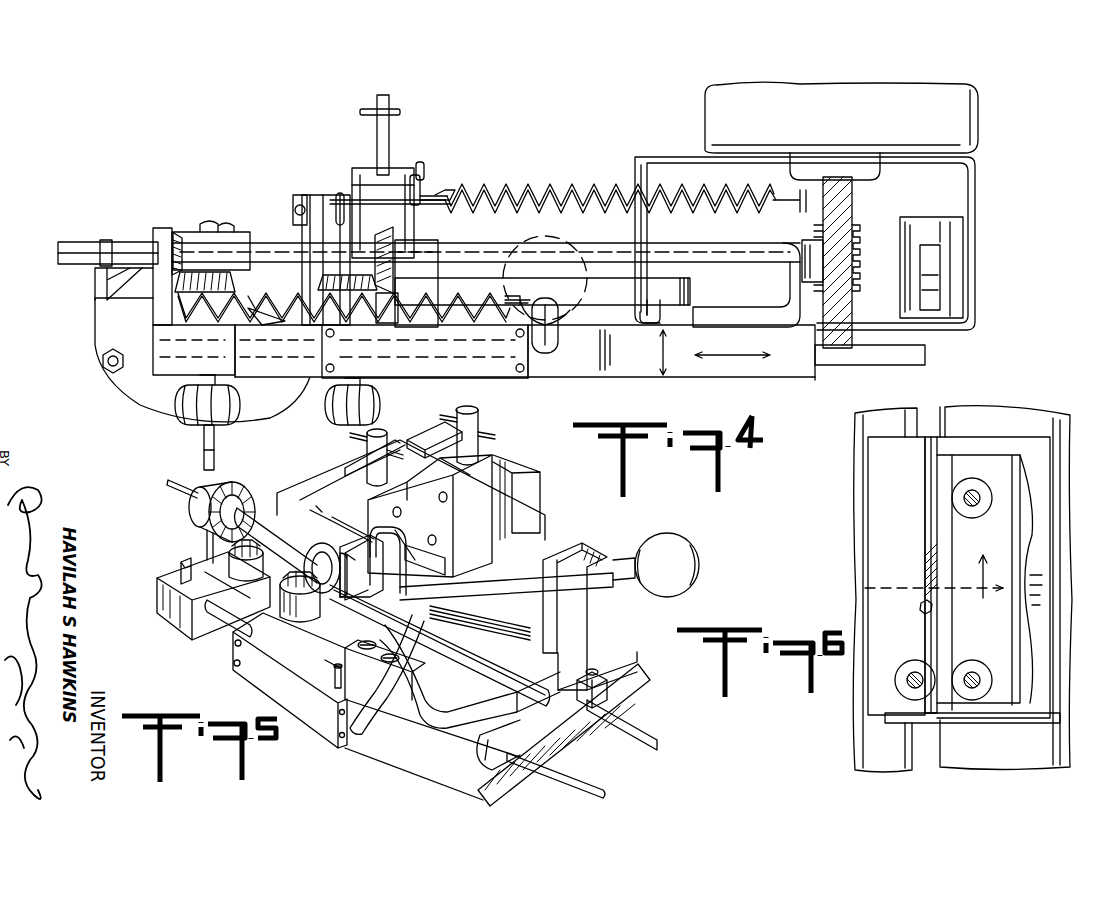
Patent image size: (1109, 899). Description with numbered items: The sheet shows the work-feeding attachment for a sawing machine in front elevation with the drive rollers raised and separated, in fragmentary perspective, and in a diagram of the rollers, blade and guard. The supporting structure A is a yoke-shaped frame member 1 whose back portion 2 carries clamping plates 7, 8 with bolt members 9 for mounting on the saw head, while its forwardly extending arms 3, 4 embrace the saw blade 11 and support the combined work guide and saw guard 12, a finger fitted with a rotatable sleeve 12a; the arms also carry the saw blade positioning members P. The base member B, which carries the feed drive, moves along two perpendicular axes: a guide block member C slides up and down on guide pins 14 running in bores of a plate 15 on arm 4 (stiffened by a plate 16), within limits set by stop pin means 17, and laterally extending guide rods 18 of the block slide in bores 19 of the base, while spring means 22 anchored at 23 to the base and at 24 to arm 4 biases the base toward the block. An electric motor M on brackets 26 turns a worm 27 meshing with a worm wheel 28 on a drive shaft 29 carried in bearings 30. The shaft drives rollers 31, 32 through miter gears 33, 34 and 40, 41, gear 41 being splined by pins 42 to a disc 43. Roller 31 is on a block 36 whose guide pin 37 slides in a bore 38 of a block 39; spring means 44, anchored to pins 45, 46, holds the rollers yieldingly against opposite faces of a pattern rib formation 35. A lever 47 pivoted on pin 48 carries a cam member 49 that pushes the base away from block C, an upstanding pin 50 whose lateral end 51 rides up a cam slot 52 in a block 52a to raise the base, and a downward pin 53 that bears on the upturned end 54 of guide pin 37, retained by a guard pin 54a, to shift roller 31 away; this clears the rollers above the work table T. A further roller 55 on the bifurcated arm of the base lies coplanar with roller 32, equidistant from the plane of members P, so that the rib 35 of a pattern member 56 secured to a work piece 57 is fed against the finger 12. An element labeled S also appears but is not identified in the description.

In FIG. 4, the yoke-shaped frame member 1 is at (90, 314).
In FIG. 5, the yoke-shaped frame member 1 is at (295, 474).
In FIG. 4, the back portion 2 is at (190, 236).
In FIG. 4, the forwardly extending arm 3 is at (95, 340).
In FIG. 5, the forwardly extending arm 3 is at (324, 490).
In FIG. 4, the forwardly extending arm 4 is at (330, 195).
In FIG. 4, the clamping plate 7 is at (110, 240).
In FIG. 5, the clamping plate 7 is at (392, 424).
In FIG. 5, the clamping plate 8 is at (420, 428).
In FIG. 5, the screw-threaded bolt members 9 is at (543, 476).
In FIG. 6, the saw blade 11 is at (925, 574).
In FIG. 4, the combined work guide and saw guard 12 is at (275, 322).
In FIG. 4, the rotatable sleeve 12a is at (212, 448).
In FIG. 6, the rotatable sleeve 12a is at (922, 614).
In FIG. 4, the guide pins 14 is at (377, 128).
In FIG. 5, the guide pins 14 is at (475, 416).
In FIG. 4, the plate 15 is at (358, 170).
In FIG. 5, the plate 15 is at (430, 516).
In FIG. 4, the stiffening plate 16 is at (303, 195).
In FIG. 4, the stop pin means 17 is at (366, 111).
In FIG. 5, the stop pin means 17 is at (498, 440).
In FIG. 4, the guide rods 18 is at (920, 346).
In FIG. 5, the guide rods 18 is at (600, 770).
In FIG. 5, the bores 19 is at (622, 722).
In FIG. 4, the spring means 22 is at (528, 192).
In FIG. 5, the spring means 22 is at (325, 518).
In FIG. 4, the spring anchor on base 23 is at (806, 195).
In FIG. 4, the spring anchor on arm 24 is at (344, 192).
In FIG. 5, the spring anchor on arm 24 is at (310, 510).
In FIG. 4, the brackets 26 is at (636, 158).
In FIG. 5, the brackets 26 is at (578, 610).
In FIG. 4, the worm 27 is at (862, 224).
In FIG. 4, the worm wheel 28 is at (846, 182).
In FIG. 4, the drive shaft 29 is at (278, 243).
In FIG. 5, the drive shaft 29 is at (520, 678).
In FIG. 4, the bearings 30 is at (440, 264).
In FIG. 5, the bearings 30 is at (362, 560).
In FIG. 4, the drive roller 31 is at (176, 406).
In FIG. 6, the drive roller 31 is at (912, 670).
In FIG. 4, the drive roller 32 is at (379, 396).
In FIG. 6, the drive roller 32 is at (978, 668).
In FIG. 4, the miter gear 33 is at (345, 275).
In FIG. 5, the miter gear 33 is at (278, 590).
In FIG. 4, the miter gear 34 is at (384, 230).
In FIG. 5, the miter gear 34 is at (324, 540).
In FIG. 6, the pattern rib formation 35 is at (947, 534).
In FIG. 4, the block 36 is at (152, 338).
In FIG. 5, the block 36 is at (156, 583).
In FIG. 4, the guide pin 37 is at (548, 348).
In FIG. 5, the guide pin 37 is at (360, 740).
In FIG. 4, the bore 38 is at (496, 372).
In FIG. 5, the bore 38 is at (335, 708).
In FIG. 4, the block 39 is at (432, 376).
In FIG. 5, the block 39 is at (290, 680).
In FIG. 4, the miter gear 40 is at (236, 280).
In FIG. 5, the miter gear 40 is at (226, 553).
In FIG. 4, the miter gear 41 is at (175, 217).
In FIG. 5, the miter gear 41 is at (206, 536).
In FIG. 4, the spaced longitudinal pins 42 is at (60, 246).
In FIG. 5, the spaced longitudinal pins 42 is at (170, 487).
In FIG. 4, the disc 43 is at (106, 270).
In FIG. 5, the disc 43 is at (190, 512).
In FIG. 4, the spring means 44 is at (380, 290).
In FIG. 5, the spring means 44 is at (322, 662).
In FIG. 5, the pin 45 is at (182, 563).
In FIG. 5, the pin 46 is at (334, 672).
In FIG. 5, the manually operated lever 47 is at (495, 590).
In FIG. 4, the upright pivot pin 48 is at (648, 330).
In FIG. 5, the upright pivot pin 48 is at (490, 752).
In FIG. 4, the cam member 49 is at (440, 300).
In FIG. 5, the cam member 49 is at (470, 676).
In FIG. 4, the upstanding pin 50 is at (434, 197).
In FIG. 5, the upstanding pin 50 is at (384, 590).
In FIG. 5, the laterally directed end portion 51 is at (425, 522).
In FIG. 4, the cam slot 52 is at (420, 180).
In FIG. 5, the cam slot 52 is at (432, 540).
In FIG. 4, the block 52a is at (420, 168).
In FIG. 5, the block 52a is at (420, 504).
In FIG. 4, the downwardly directed pin 53 is at (572, 313).
In FIG. 4, the upturned end 54 is at (530, 300).
In FIG. 5, the upturned end 54 is at (513, 618).
In FIG. 5, the horizontal guard pin 54a is at (527, 634).
In FIG. 6, the rib-engaging roller 55 is at (978, 485).
In FIG. 6, the pattern member 56 is at (1048, 560).
In FIG. 6, the work piece 57 is at (1048, 625).
In FIG. 4, the supporting structure A is at (95, 230).
In FIG. 4, the base member B is at (666, 380).
In FIG. 5, the base member B is at (628, 685).
In FIG. 4, the guide block member C is at (388, 318).
In FIG. 5, the guide block member C is at (490, 550).
In FIG. 4, the electric motor M is at (838, 120).
In FIG. 6, the saw blade positioning member P is at (934, 583).
In FIG. 4, the switch S is at (969, 243).
In FIG. 6, the work table T is at (1062, 718).